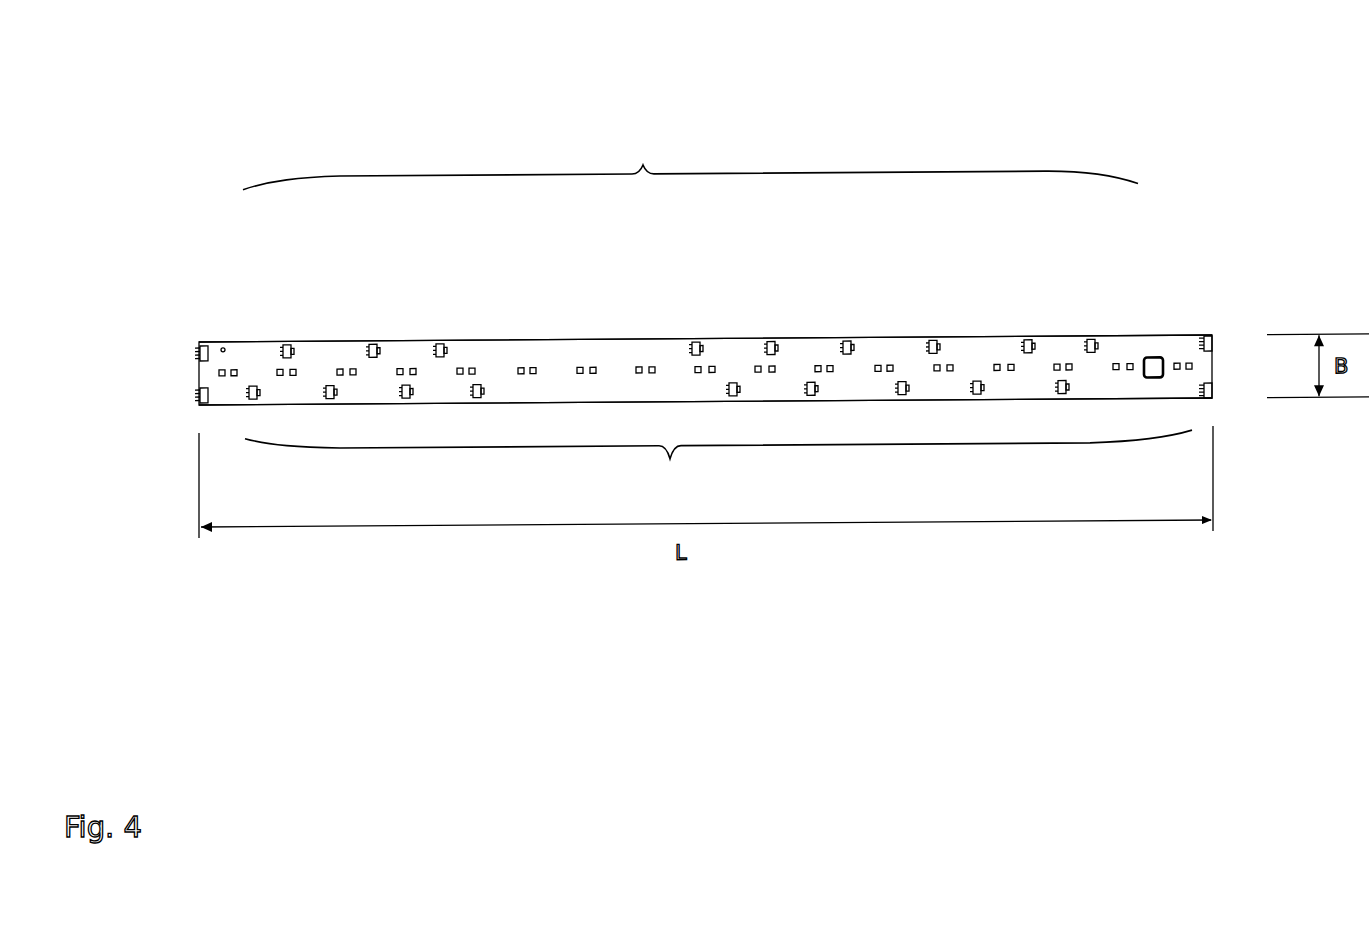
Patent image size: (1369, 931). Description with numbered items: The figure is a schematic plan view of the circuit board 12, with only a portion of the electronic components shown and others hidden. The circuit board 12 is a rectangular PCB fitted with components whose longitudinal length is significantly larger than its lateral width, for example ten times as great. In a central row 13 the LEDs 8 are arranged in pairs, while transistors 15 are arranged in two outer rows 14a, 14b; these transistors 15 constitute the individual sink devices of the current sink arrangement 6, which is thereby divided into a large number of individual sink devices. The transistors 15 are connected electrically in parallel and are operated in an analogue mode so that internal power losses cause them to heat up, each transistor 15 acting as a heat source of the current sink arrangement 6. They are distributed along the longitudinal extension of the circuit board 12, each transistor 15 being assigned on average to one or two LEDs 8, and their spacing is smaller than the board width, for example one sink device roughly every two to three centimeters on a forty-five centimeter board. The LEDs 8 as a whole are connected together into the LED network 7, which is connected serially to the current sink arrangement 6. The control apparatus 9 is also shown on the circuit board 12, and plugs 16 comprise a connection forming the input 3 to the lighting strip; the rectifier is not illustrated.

The input 3 is at (1247, 332).
The current sink arrangement 6 is at (690, 163).
The LED network 7 is at (718, 460).
The LEDs 8 is at (521, 370).
The control apparatus 9 is at (1158, 371).
The circuit board 12 is at (1154, 138).
The central row 13 is at (178, 373).
The outer row 14a is at (178, 349).
The outer row 14b is at (178, 402).
The transistors 15 is at (253, 387).
The plugs 16 is at (1212, 391).